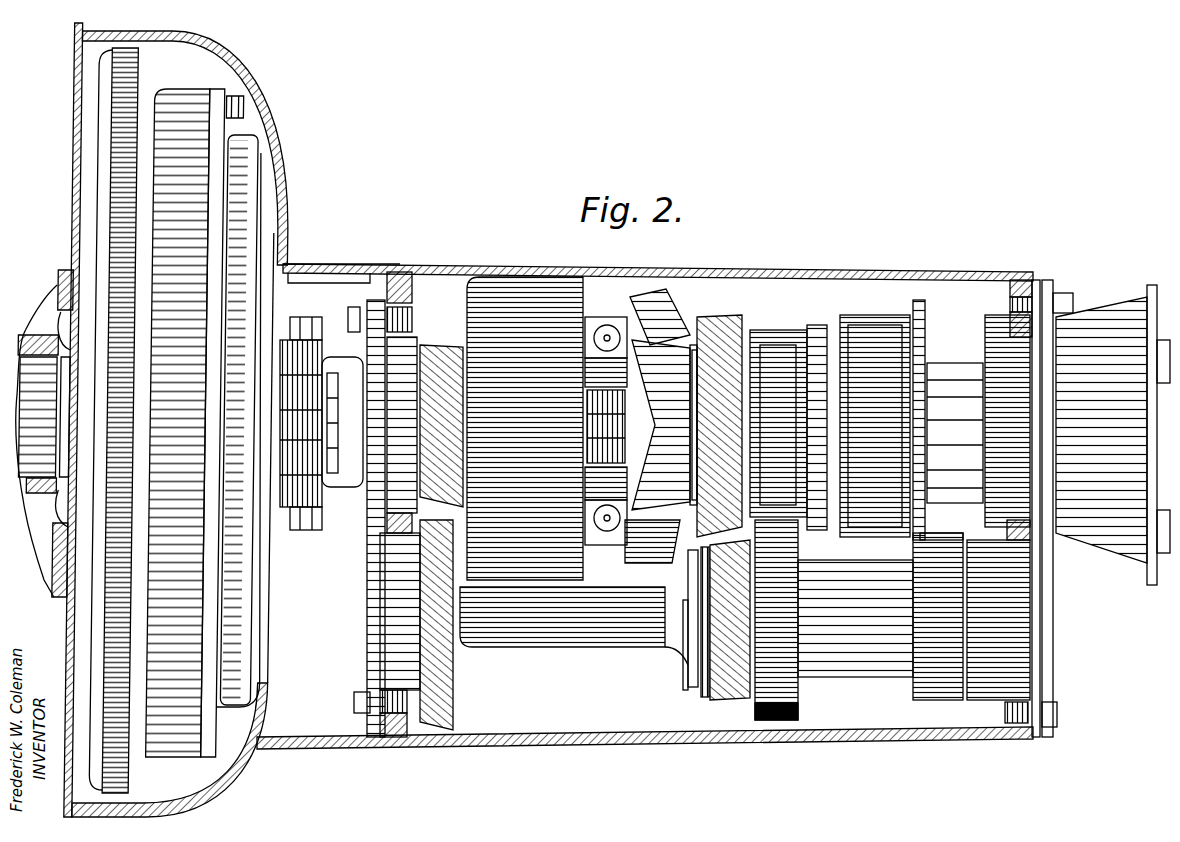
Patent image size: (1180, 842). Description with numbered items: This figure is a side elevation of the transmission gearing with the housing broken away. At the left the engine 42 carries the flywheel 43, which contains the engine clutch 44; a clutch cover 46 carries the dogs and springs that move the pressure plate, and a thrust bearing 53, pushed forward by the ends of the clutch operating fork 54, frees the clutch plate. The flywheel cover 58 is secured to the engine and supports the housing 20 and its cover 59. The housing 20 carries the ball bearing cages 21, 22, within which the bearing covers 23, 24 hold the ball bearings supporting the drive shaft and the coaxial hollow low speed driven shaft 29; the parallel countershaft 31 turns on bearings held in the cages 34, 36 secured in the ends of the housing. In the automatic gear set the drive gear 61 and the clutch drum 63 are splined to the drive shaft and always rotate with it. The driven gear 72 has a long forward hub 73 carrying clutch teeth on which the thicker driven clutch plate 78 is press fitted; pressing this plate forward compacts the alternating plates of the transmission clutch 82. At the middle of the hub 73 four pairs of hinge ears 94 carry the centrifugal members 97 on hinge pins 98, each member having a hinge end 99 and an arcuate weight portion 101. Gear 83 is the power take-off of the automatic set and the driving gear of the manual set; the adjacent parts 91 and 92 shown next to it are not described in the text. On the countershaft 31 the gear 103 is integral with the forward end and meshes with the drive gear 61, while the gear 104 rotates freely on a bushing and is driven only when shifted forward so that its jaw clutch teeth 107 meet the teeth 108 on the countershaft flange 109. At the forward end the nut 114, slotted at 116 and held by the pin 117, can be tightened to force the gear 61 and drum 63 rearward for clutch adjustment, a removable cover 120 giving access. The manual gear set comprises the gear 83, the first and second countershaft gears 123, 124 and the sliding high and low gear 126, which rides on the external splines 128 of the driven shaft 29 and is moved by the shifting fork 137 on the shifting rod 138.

The housing 20 is at (540, 749).
The ball bearing cage 21 is at (421, 335).
The ball bearing cage 22 is at (1043, 279).
The bearing cover 23 is at (368, 294).
The bearing cover 24 is at (1055, 283).
The low speed driven shaft 29 is at (948, 500).
The countershaft 31 is at (580, 640).
The cage 34 is at (372, 646).
The cage 36 is at (1033, 643).
The engine 42 is at (57, 305).
The flywheel 43 is at (160, 90).
The engine clutch 44 is at (281, 604).
The clutch cover 46 is at (270, 651).
The thrust bearing 53 is at (272, 347).
The clutch operating fork 54 is at (283, 423).
The flywheel cover 58 is at (243, 68).
The cover 59 is at (453, 270).
The drive gear 61 is at (428, 348).
The clutch drum 63 is at (513, 292).
The driven gear 72 is at (710, 314).
The hub 73 is at (692, 350).
The driven clutch plate 78 is at (587, 323).
The transmission clutch 82 is at (603, 312).
The manual driving gear 83 is at (762, 337).
The gear cluster 91 is at (760, 333).
The collar 92 is at (817, 340).
The hinge ears 94 is at (598, 405).
The centrifugal member 97 is at (679, 303).
The hinge pin 98 is at (605, 517).
The hinge end 99 is at (602, 432).
The arcuate weight portion 101 is at (627, 562).
The gear 103 is at (447, 715).
The gear 104 is at (725, 698).
The jaw clutch teeth 107 is at (705, 688).
The clutch teeth 108 is at (695, 690).
The flange 109 is at (685, 662).
The nut 114 is at (333, 500).
The slot 116 is at (332, 422).
The pin 117 is at (348, 356).
The removable cover 120 is at (324, 270).
The first manual countershaft gear 123 is at (797, 709).
The second manual countershaft gear 124 is at (935, 698).
The sliding high and low gear 126 is at (853, 545).
The external splines 128 is at (962, 468).
The shifting fork 137 is at (928, 291).
The shifting rod 138 is at (975, 326).